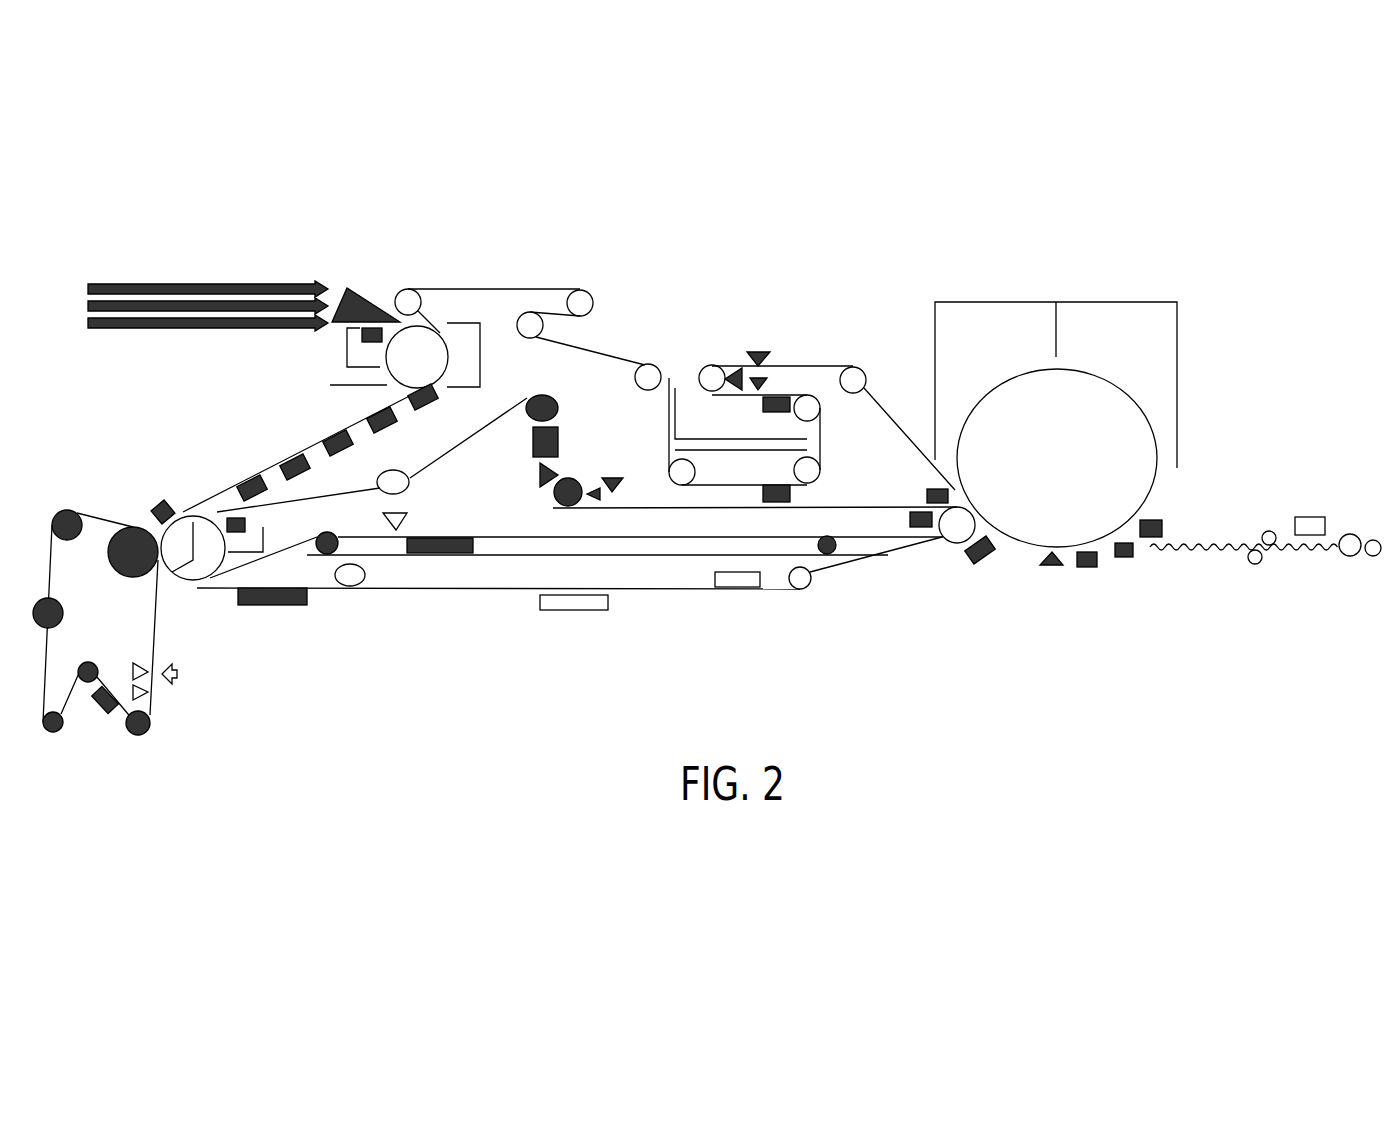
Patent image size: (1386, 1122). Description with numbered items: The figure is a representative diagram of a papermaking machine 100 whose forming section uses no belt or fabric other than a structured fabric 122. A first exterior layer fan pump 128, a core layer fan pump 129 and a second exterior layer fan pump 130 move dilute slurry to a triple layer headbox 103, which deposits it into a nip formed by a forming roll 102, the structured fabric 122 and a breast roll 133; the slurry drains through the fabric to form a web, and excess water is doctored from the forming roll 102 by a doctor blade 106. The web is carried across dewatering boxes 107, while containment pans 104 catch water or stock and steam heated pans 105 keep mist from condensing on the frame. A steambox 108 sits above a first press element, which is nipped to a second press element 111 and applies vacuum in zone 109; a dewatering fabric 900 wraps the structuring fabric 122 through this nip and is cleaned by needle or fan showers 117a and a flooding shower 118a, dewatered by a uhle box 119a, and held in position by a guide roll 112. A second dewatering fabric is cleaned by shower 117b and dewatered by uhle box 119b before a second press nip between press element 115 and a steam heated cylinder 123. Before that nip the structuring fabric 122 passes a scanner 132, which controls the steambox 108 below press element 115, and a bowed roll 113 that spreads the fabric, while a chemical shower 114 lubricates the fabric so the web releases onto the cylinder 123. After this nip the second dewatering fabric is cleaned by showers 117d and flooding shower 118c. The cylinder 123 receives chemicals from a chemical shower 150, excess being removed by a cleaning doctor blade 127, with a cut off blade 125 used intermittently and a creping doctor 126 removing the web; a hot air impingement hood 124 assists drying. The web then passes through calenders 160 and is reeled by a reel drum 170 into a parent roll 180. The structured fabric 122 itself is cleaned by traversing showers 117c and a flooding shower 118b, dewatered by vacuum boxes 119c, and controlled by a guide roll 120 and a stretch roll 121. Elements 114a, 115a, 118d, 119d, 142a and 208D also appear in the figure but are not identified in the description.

The papermaking machine 100 is at (262, 214).
The forming roll 102 is at (431, 371).
The triple layer headbox 103 is at (357, 288).
The containment pans 104 is at (483, 350).
The steam heated pans 105 is at (337, 383).
The doctor blade 106 is at (347, 328).
The dewatering boxes 107 is at (290, 607).
The steambox 108 is at (290, 462).
The vacuum zone 109 is at (160, 527).
The second press element 111 is at (120, 577).
The guide roll 112 is at (42, 628).
The bowed roll 113 is at (806, 589).
The chemical shower 114 is at (912, 557).
The roller 114a is at (377, 483).
The press element 115 is at (953, 530).
The roller 115a is at (558, 405).
The high pressure needle or fan showers 117a is at (148, 668).
The high-pressure needle or fan shower 117b is at (403, 517).
The traversing high pressure fan or needle showers 117c is at (758, 352).
The high pressure needle or fan showers 117d is at (617, 450).
The flooding shower 118a is at (150, 695).
The high-volume flooding shower 118b is at (743, 367).
The flooding shower 118c is at (600, 500).
The sensor 118d is at (523, 538).
The uhle box 119a is at (177, 675).
The uhle box 119b is at (443, 557).
The vacuum boxes 119c is at (785, 395).
The actuator 119d is at (560, 440).
The guide roll 120 is at (648, 364).
The stretch roll 121 is at (585, 289).
The structured fabric 122 is at (490, 288).
The steam heated cylinder 123 is at (1065, 471).
The hot air impingement hood 124 is at (996, 305).
The cut off blade 125 is at (1162, 528).
The creping doctor 126 is at (1125, 558).
The cleaning doctor blade 127 is at (1087, 568).
The first exterior layer fan pump 128 is at (88, 290).
The core layer fan pump 129 is at (88, 304).
The second exterior layer fan pump 130 is at (88, 321).
The scanner 132 is at (745, 589).
The breast roll 133 is at (402, 289).
The roller 142a is at (136, 736).
The chemical shower 150 is at (1052, 566).
The calenders 160 is at (1312, 517).
The reel drum 170 is at (1356, 535).
The parent roll 180 is at (1375, 558).
The unit 208D is at (575, 612).
The dewatering fabric 900 is at (112, 520).